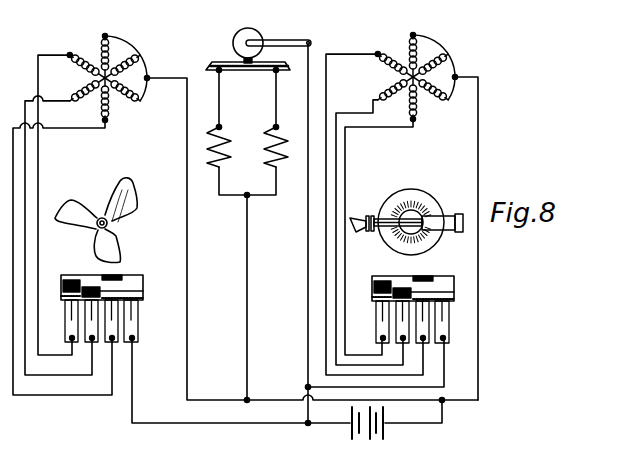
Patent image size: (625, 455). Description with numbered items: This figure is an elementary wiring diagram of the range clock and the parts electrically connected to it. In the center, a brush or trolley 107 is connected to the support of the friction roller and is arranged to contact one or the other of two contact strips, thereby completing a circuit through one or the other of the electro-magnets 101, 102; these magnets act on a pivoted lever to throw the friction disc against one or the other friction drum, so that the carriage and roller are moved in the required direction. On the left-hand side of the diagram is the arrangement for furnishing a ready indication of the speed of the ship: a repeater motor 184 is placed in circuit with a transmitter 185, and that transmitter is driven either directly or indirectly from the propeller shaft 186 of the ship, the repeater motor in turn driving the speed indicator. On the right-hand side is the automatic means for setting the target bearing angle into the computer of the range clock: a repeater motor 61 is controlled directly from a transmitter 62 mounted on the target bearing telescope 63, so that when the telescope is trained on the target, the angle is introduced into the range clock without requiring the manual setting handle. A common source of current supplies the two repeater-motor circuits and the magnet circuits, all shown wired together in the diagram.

The brush or trolley 107 is at (254, 34).
The electro-magnet 101 is at (221, 128).
The electro-magnet 102 is at (277, 128).
The repeater motor 184 is at (129, 98).
The propeller shaft 186 is at (107, 223).
The transmitter 185 is at (133, 276).
The repeater motor 61 is at (436, 100).
The target bearing telescope 63 is at (446, 220).
The transmitter 62 is at (402, 277).